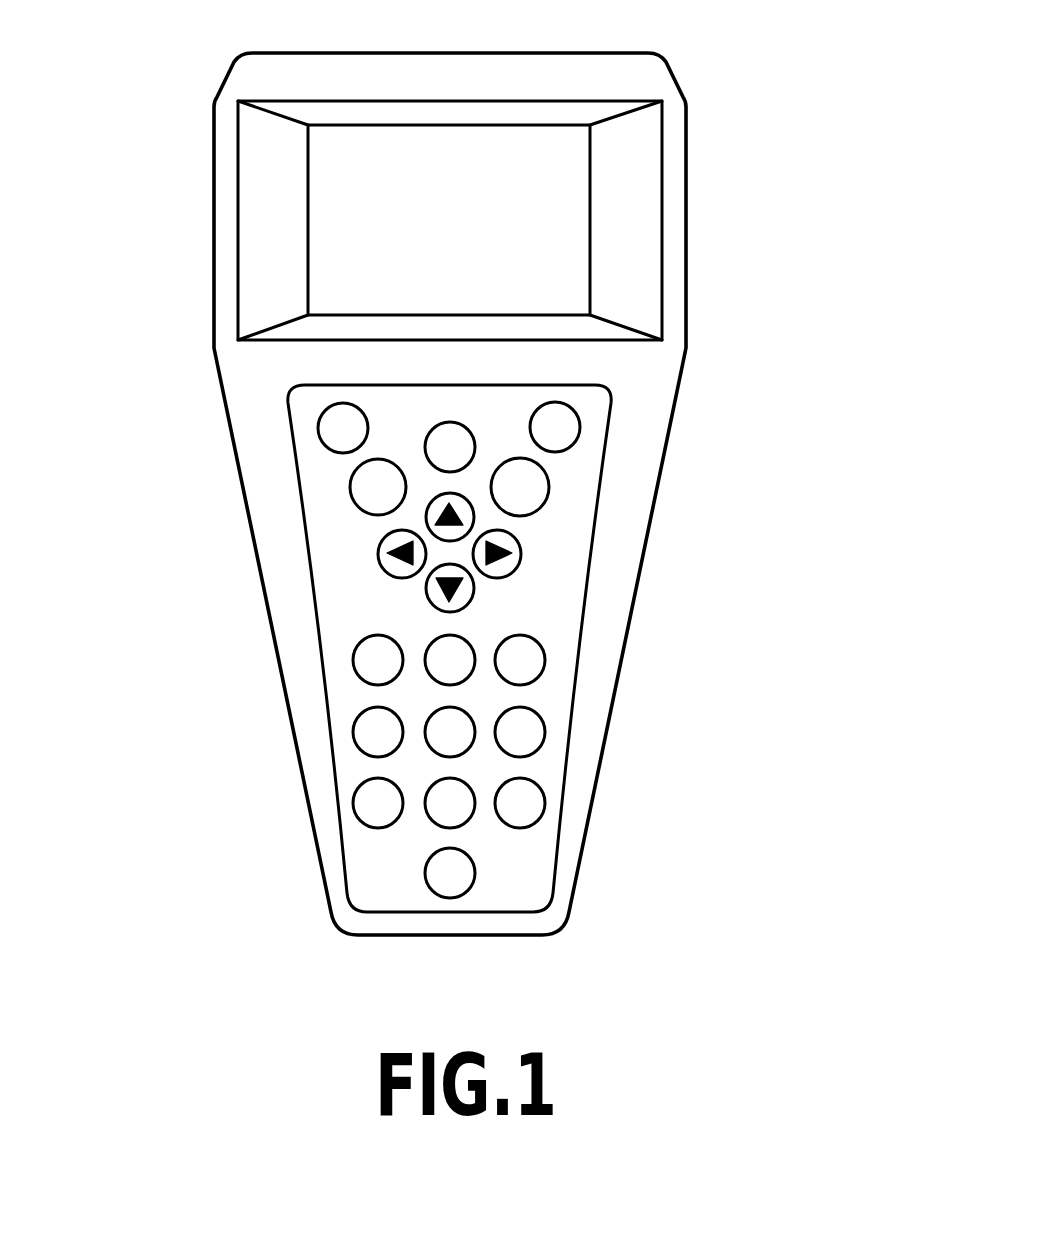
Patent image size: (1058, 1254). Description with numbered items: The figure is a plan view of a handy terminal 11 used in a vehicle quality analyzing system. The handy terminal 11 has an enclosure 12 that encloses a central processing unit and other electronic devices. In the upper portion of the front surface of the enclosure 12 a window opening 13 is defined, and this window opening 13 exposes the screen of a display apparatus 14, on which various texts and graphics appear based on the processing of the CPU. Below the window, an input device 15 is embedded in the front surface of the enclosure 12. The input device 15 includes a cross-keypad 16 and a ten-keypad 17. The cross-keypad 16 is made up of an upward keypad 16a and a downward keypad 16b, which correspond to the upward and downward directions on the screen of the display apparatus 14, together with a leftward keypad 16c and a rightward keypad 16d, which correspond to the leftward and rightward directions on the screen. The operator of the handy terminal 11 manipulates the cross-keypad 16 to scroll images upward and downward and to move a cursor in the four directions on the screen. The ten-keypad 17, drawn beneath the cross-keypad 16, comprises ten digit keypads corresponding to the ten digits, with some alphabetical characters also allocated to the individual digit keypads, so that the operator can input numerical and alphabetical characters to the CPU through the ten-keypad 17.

The handy terminal 11 is at (397, 494).
The enclosure 12 is at (582, 832).
The window opening 13 is at (497, 220).
The display apparatus 14 is at (580, 178).
The input device 15 is at (458, 648).
The cross-keypad 16 is at (458, 555).
The upward keypad 16a is at (473, 514).
The downward keypad 16b is at (463, 605).
The leftward keypad 16c is at (388, 570).
The rightward keypad 16d is at (521, 548).
The ten-keypad 17 is at (265, 697).